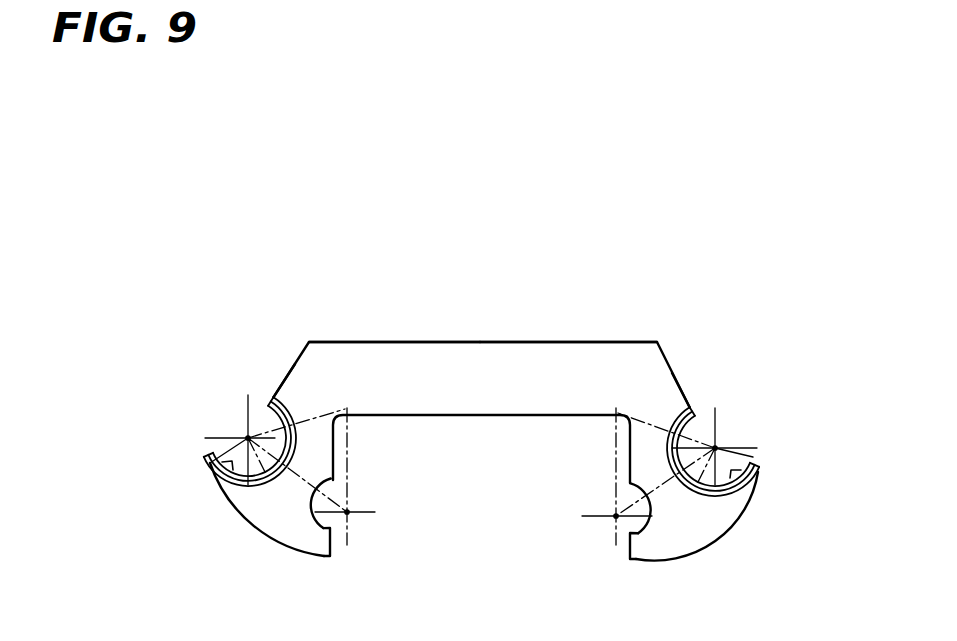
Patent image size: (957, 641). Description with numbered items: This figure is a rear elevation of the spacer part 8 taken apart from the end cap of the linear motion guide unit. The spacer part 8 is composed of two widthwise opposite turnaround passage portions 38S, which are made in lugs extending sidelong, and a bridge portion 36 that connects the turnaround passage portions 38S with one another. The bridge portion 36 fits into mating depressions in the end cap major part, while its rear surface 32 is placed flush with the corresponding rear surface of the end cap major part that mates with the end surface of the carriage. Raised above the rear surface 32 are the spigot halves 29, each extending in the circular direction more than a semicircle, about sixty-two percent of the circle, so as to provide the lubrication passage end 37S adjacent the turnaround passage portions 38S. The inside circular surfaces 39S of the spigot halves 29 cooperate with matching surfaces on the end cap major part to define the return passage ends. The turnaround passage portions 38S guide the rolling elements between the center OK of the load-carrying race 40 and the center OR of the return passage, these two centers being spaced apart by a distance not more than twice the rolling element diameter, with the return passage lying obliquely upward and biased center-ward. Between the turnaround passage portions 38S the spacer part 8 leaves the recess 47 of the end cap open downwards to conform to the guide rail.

The spacer part 8 is at (612, 336).
The spigot halves 29 is at (287, 405).
The rear surface 32 is at (403, 367).
The bridge portion 36 is at (502, 373).
The lubrication passage end 37S is at (273, 398).
The turnaround passage portions 38S is at (273, 518).
The inside circular surfaces 39S is at (210, 463).
The load-carrying race 40 is at (326, 529).
The recess 47 is at (493, 420).
The center of the return passage OR is at (248, 438).
The center of the load-carrying race OK is at (347, 512).